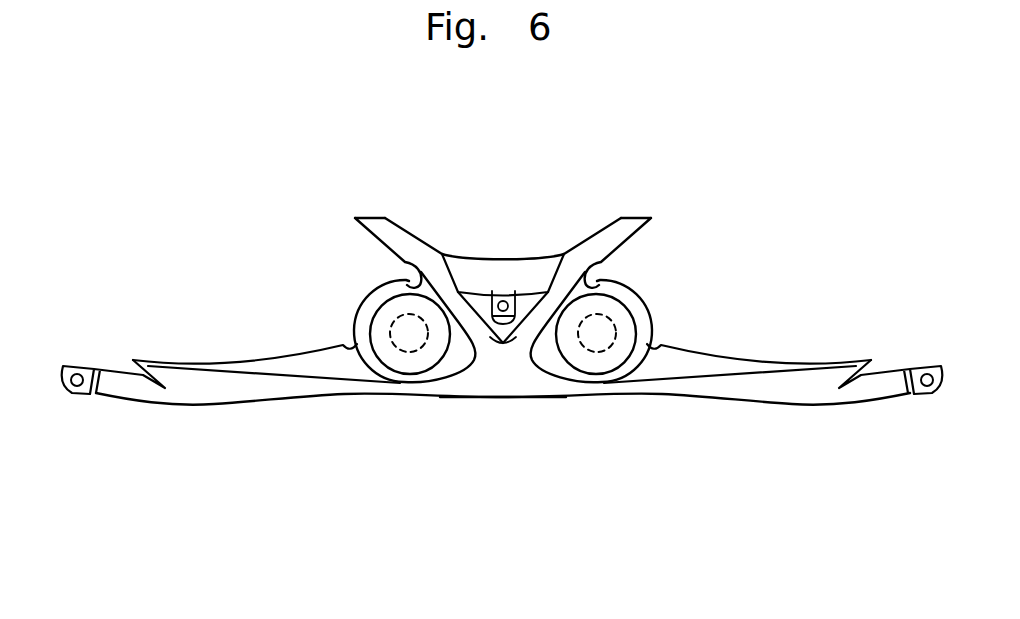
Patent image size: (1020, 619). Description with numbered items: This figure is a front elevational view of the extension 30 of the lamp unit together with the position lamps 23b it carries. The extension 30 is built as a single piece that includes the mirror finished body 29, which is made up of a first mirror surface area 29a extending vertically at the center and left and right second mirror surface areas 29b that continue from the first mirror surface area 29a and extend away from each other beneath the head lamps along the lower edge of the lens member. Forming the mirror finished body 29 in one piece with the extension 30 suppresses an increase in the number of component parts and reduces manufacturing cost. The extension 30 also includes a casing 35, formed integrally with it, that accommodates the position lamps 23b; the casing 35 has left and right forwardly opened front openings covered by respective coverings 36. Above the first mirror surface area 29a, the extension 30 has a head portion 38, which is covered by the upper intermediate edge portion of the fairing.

The position lamp 23b is at (392, 330).
The mirror finished body 29 is at (773, 497).
The first mirror surface area 29a is at (512, 373).
The second mirror surface area 29b is at (280, 388).
The extension 30 is at (772, 344).
The casing 35 is at (383, 280).
The covering 36 is at (385, 325).
The head portion 38 is at (508, 268).